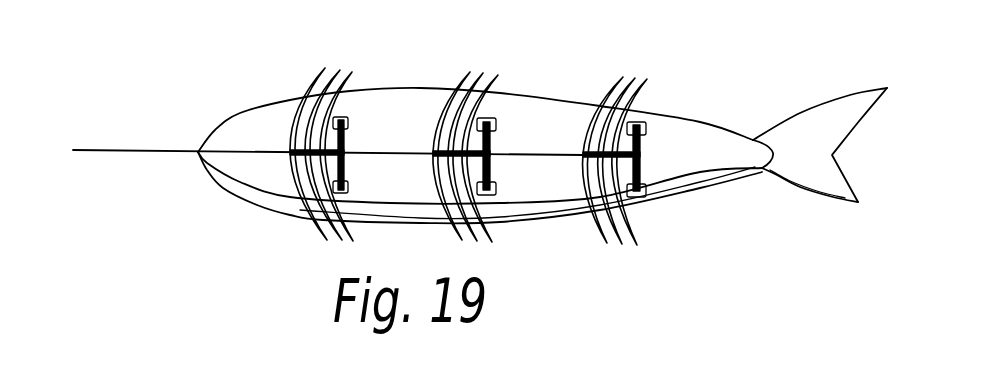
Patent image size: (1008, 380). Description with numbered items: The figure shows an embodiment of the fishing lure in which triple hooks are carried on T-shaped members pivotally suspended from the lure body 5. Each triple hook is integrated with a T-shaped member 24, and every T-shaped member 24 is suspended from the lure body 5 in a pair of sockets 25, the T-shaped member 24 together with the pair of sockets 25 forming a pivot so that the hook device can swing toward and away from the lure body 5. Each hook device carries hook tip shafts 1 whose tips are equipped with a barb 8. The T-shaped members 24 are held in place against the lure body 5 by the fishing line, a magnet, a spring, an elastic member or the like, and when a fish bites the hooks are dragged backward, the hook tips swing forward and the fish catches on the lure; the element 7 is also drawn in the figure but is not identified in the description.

The hook tip shaft 1 is at (290, 102).
The lure body 5 is at (392, 102).
The central rod 7 is at (132, 149).
The barb 8 is at (350, 83).
The T-shaped member 24 is at (640, 158).
The socket 25 is at (498, 122).